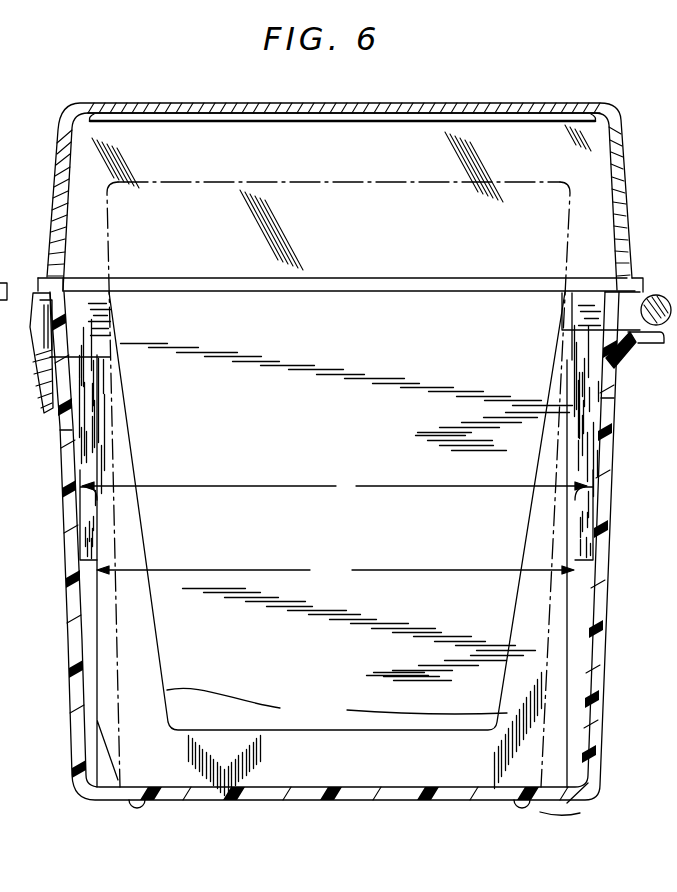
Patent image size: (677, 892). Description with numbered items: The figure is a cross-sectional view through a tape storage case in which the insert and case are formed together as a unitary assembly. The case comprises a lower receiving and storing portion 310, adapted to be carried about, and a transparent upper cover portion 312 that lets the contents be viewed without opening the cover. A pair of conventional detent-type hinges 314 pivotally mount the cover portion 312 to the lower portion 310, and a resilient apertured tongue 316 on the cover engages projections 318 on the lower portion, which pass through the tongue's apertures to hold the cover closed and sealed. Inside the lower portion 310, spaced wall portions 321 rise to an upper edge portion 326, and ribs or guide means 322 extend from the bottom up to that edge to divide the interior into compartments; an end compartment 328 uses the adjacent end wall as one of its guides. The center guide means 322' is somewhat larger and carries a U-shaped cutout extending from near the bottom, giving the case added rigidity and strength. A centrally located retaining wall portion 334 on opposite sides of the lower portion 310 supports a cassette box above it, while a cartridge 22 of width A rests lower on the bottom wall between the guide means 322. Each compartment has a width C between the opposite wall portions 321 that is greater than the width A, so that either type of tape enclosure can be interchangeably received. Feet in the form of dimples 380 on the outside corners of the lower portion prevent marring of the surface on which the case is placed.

The cover portion 312 is at (53, 129).
The cartridge 22 is at (241, 182).
The upper edge portion 326 is at (66, 289).
The end compartment 328 is at (6, 264).
The hinge 314 is at (651, 292).
The projection 318 is at (34, 348).
The resilient apertured tongue 316 is at (44, 408).
The lower receiving and storing portion 310 is at (73, 705).
The wall portion 321 is at (75, 432).
The guide means 322 is at (341, 511).
The center guide means 322' is at (337, 721).
The retaining wall portion 334 is at (82, 623).
The dimples 380 is at (578, 813).
The width C is at (334, 487).
The width A is at (335, 572).